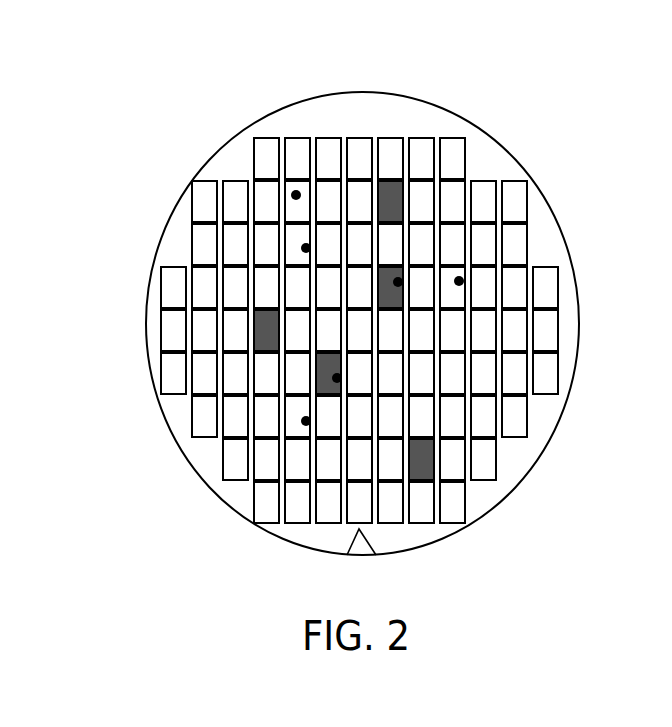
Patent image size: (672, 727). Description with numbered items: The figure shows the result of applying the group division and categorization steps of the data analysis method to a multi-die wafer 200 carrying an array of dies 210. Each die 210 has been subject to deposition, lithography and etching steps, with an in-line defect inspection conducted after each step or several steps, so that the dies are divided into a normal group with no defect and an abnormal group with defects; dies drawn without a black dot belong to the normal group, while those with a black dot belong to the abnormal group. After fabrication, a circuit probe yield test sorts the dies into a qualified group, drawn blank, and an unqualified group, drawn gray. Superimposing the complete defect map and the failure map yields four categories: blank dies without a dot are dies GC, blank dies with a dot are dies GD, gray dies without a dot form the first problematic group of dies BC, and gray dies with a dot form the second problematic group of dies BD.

The wafer 200 is at (537, 460).
The dies 210 is at (555, 378).
The dies GD is at (307, 183).
The dies GC is at (363, 190).
The dies BC is at (262, 322).
The dies BD is at (327, 368).